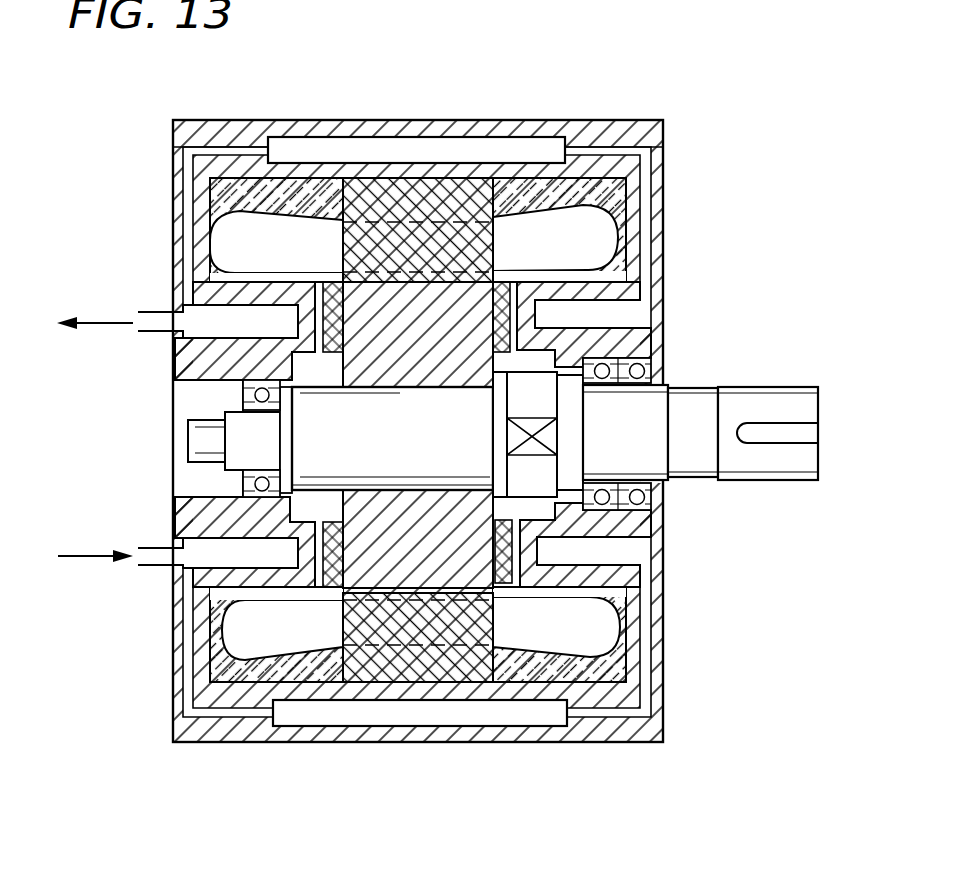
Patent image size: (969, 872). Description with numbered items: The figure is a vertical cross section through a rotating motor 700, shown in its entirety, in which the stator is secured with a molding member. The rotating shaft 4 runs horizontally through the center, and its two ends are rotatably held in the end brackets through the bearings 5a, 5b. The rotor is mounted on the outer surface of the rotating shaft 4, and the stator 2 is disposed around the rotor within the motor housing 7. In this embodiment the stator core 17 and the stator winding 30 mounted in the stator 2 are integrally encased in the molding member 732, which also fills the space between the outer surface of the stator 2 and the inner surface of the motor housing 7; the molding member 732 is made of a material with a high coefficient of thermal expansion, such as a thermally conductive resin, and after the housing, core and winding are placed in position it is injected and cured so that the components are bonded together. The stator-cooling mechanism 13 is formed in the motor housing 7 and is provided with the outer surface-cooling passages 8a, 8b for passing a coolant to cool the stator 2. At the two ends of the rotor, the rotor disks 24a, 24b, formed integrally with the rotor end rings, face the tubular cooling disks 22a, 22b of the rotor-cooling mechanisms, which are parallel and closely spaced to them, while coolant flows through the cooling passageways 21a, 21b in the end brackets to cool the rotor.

The rotating motor 700 is at (692, 104).
The motor housing 7 is at (220, 120).
The stator-cooling mechanism 13 is at (338, 122).
The stator core 17 is at (412, 210).
The outer surface-cooling passage 8a is at (487, 148).
The outer surface-cooling passage 8b is at (380, 712).
The molding member 732 is at (620, 197).
The stator winding 30 is at (603, 242).
The stator 2 is at (600, 272).
The cooling passageway 21a is at (625, 318).
The cooling passageway 21b is at (196, 350).
The cooling disk 22a is at (610, 523).
The cooling disk 22b is at (210, 517).
The rotor disk 24a is at (503, 568).
The rotor disk 24b is at (308, 578).
The bearing 5a is at (660, 372).
The bearing 5b is at (243, 393).
The rotating shaft 4 is at (774, 387).